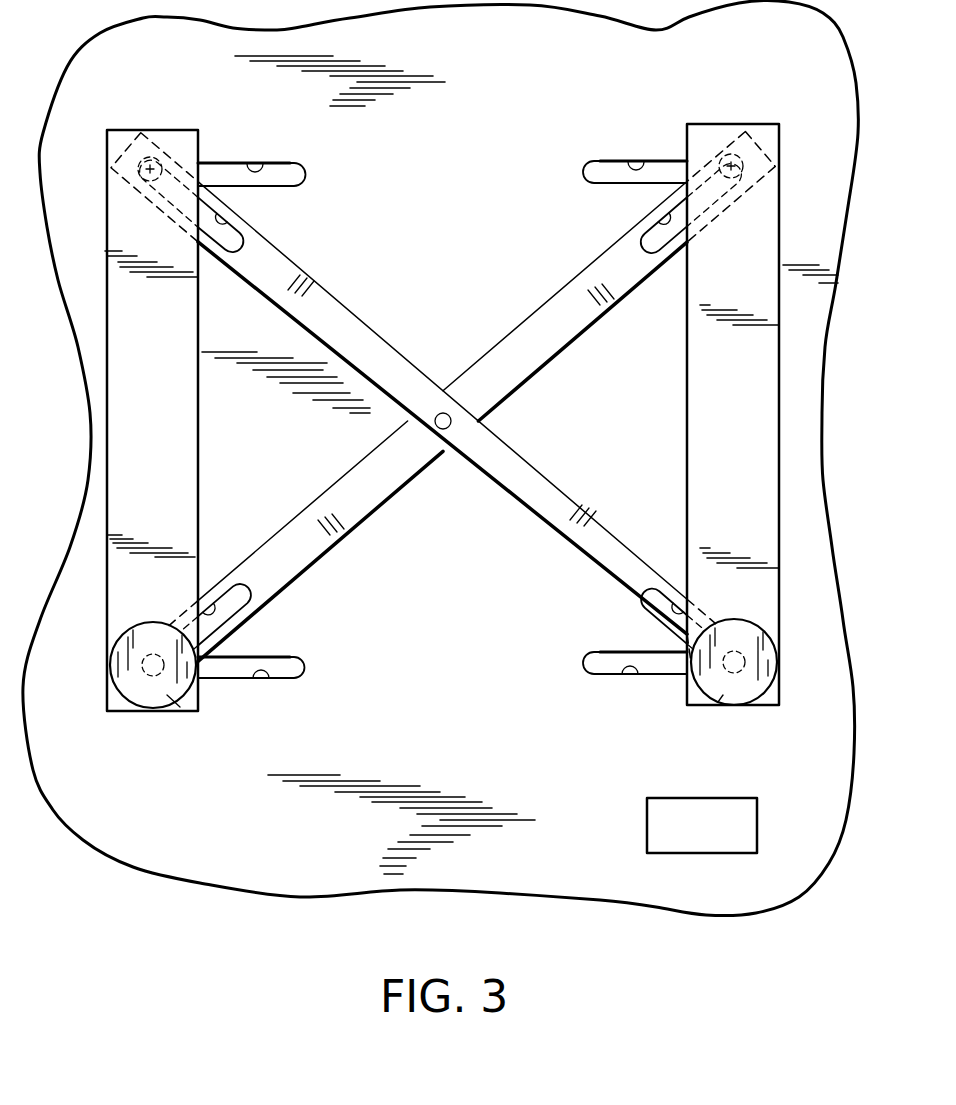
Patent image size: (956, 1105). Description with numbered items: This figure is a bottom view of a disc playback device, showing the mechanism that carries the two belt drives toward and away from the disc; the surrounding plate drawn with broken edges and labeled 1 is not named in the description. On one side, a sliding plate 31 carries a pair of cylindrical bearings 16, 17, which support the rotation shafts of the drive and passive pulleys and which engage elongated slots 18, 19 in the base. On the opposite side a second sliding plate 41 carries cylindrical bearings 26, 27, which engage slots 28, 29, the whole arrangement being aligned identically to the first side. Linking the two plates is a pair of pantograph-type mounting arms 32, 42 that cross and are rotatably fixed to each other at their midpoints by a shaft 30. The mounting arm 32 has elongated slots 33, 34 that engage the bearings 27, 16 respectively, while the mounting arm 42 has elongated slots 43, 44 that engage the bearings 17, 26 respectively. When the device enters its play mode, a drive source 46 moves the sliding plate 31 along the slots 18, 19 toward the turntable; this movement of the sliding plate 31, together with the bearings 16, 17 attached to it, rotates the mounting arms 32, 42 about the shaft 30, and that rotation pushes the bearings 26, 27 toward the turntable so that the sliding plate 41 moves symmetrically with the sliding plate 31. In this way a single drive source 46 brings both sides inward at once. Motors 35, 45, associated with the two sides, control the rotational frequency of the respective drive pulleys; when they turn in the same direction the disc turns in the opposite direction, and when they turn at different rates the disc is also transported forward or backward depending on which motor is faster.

The base plate 1 is at (446, 145).
The cylindrical bearing 16 is at (738, 665).
The cylindrical bearing 17 is at (725, 160).
The elongated slot 18 is at (630, 671).
The elongated slot 19 is at (630, 160).
The cylindrical bearing 26 is at (145, 675).
The cylindrical bearing 27 is at (160, 162).
The slot 28 is at (263, 671).
The slot 29 is at (247, 163).
The shaft 30 is at (440, 430).
The sliding plate 31 is at (700, 404).
The mounting arm 32 is at (333, 303).
The elongated slot 33 is at (227, 227).
The elongated slot 34 is at (657, 620).
The motor 35 is at (718, 702).
The sliding plate 41 is at (182, 418).
The mounting arm 42 is at (557, 306).
The elongated slot 43 is at (652, 223).
The elongated slot 44 is at (247, 603).
The motor 45 is at (182, 713).
The drive source 46 is at (734, 706).